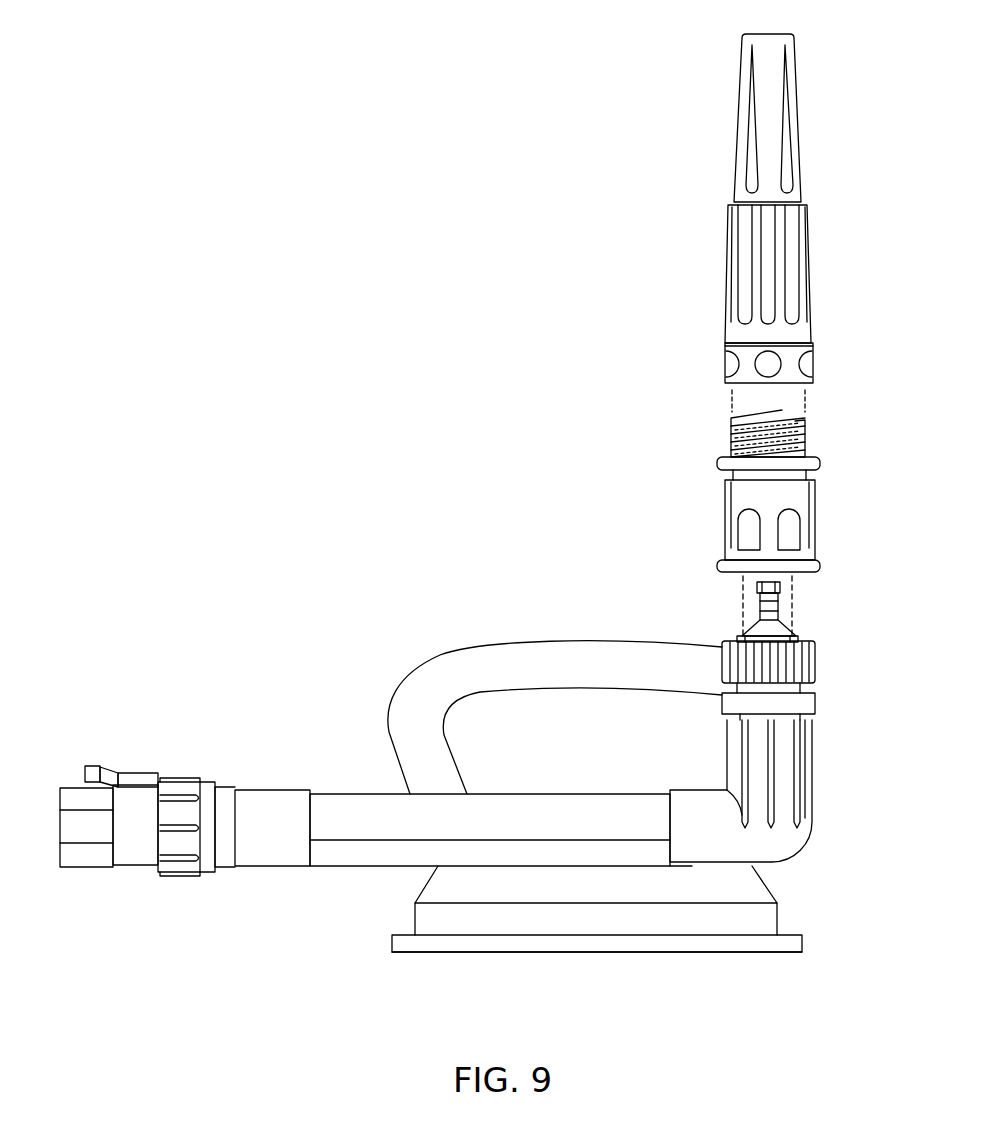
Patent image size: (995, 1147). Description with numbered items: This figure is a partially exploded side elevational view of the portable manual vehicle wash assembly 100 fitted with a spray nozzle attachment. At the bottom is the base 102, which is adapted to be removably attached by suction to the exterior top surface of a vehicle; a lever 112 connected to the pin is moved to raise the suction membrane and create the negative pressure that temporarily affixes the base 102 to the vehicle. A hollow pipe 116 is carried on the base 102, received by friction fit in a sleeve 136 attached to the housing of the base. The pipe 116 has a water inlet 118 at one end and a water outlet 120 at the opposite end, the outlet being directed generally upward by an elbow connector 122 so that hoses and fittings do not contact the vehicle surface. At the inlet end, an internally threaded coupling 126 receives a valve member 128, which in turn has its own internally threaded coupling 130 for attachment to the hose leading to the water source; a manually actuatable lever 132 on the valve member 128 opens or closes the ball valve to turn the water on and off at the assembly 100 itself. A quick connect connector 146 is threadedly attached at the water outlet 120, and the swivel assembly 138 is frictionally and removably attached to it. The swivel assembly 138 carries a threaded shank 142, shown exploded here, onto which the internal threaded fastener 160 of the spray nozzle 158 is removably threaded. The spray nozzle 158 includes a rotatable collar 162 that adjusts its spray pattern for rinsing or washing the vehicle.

The assembly 100 is at (606, 537).
The base 102 is at (818, 909).
The lever 112 is at (555, 699).
The hollow pipe 116 is at (468, 789).
The water inlet 118 is at (231, 774).
The water outlet 120 is at (803, 717).
The elbow connector 122 is at (793, 793).
The internally threaded coupling 126 is at (160, 796).
The valve member 128 is at (156, 853).
The internally threaded coupling 130 is at (114, 873).
The lever 132 is at (89, 758).
The sleeve 136 is at (597, 921).
The swivel assembly 138 is at (806, 553).
The threaded shank 142 is at (814, 439).
The quick connect connector 146 is at (815, 632).
The spray nozzle 158 is at (710, 122).
The internal threaded fastener 160 is at (735, 363).
The rotatable collar 162 is at (818, 274).